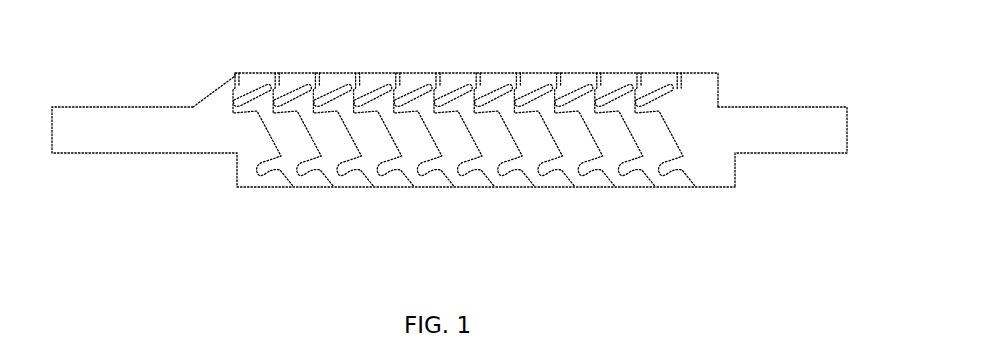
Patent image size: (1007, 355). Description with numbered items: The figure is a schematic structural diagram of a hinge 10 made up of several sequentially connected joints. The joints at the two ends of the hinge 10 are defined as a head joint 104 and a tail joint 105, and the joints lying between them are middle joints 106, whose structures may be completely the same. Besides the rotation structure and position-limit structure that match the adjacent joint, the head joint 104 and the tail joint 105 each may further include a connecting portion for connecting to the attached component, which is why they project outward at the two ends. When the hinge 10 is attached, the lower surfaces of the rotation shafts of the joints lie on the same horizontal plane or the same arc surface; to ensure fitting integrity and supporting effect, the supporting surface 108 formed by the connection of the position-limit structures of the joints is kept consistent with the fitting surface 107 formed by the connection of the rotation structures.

The hinge 10 is at (449, 139).
The head joint 104 is at (227, 135).
The tail joint 105 is at (718, 137).
The middle joint 106 is at (427, 133).
The fitting surface 107 is at (553, 188).
The supporting surface 108 is at (498, 73).